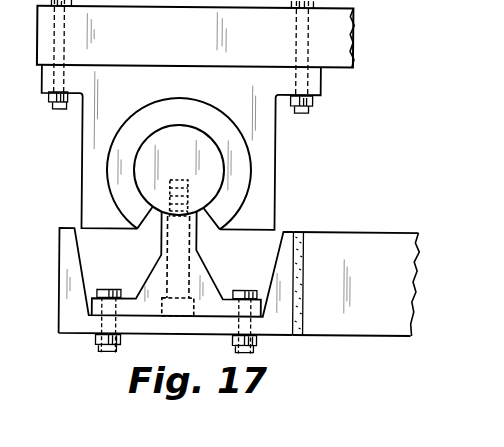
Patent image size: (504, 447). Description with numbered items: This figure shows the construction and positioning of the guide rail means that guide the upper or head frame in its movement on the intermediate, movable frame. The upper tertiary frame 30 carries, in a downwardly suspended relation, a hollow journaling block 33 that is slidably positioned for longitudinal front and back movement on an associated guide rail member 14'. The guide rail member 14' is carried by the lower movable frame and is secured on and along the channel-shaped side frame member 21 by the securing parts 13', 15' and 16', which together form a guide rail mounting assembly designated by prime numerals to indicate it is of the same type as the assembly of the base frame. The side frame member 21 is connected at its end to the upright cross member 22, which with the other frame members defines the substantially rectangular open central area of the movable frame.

The tertiary frame 30 is at (340, 43).
The journaling block 33 is at (269, 143).
The guide rail member 14' is at (249, 193).
The rail securing part 15' is at (209, 266).
The rail securing part 13' is at (177, 263).
The rail securing part 16' is at (177, 305).
The side frame member 21 is at (60, 267).
The cross member 22 is at (366, 231).